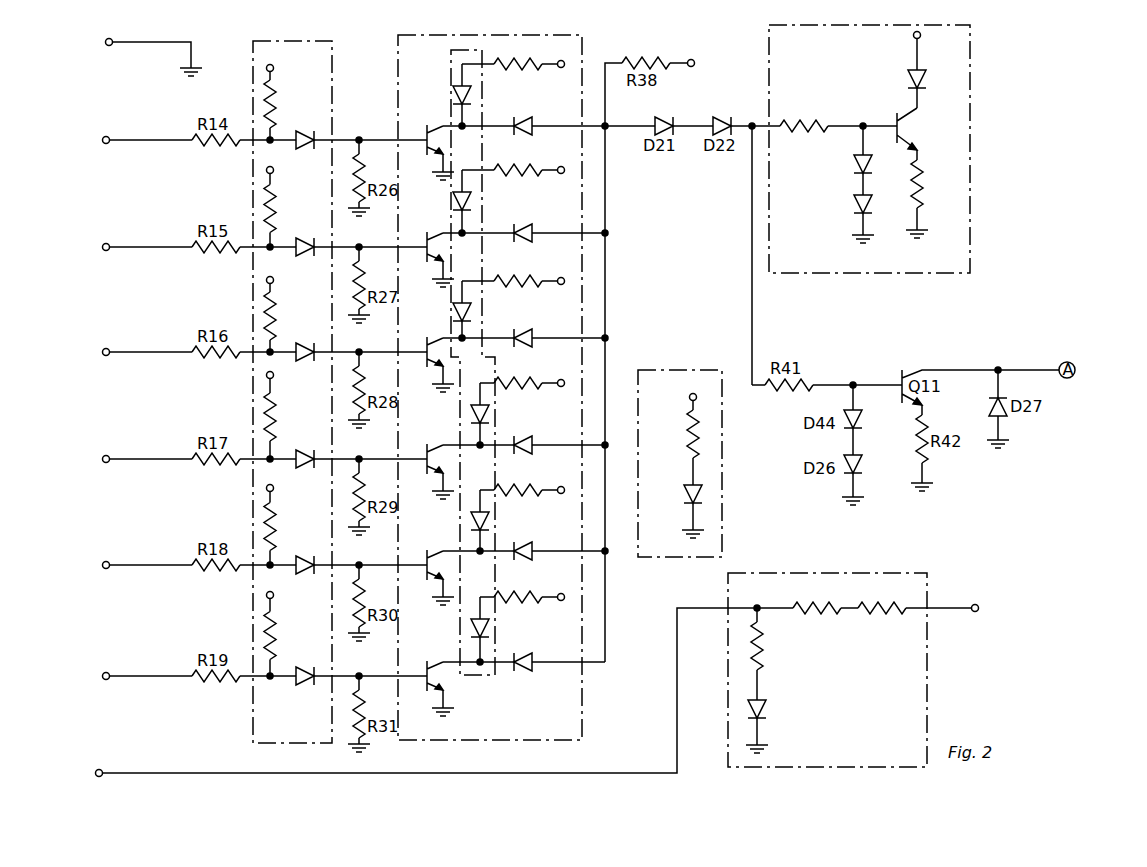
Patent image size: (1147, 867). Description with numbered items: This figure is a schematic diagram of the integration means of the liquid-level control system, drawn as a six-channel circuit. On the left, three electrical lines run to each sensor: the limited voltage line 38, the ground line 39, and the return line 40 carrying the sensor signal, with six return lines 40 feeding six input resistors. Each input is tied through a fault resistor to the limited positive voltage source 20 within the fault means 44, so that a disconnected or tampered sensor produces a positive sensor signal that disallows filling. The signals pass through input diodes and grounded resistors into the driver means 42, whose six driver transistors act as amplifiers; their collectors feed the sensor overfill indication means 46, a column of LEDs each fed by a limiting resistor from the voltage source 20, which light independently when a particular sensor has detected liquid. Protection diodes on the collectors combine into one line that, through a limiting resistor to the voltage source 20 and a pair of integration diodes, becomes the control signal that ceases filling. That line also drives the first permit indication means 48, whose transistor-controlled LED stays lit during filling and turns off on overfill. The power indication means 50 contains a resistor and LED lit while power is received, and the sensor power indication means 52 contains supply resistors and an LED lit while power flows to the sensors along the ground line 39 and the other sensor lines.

The limited positive voltage source 20 is at (274, 70).
The limited voltage line 38 is at (127, 44).
The ground line 39 is at (120, 772).
The return line 40 is at (118, 138).
The driver means 42 is at (519, 383).
The fault means 44 is at (335, 97).
The sensor overfill indication means 46 is at (450, 78).
The first permit indication means 48 is at (862, 275).
The power indication means 50 is at (722, 508).
The sensor power indication means 52 is at (905, 572).